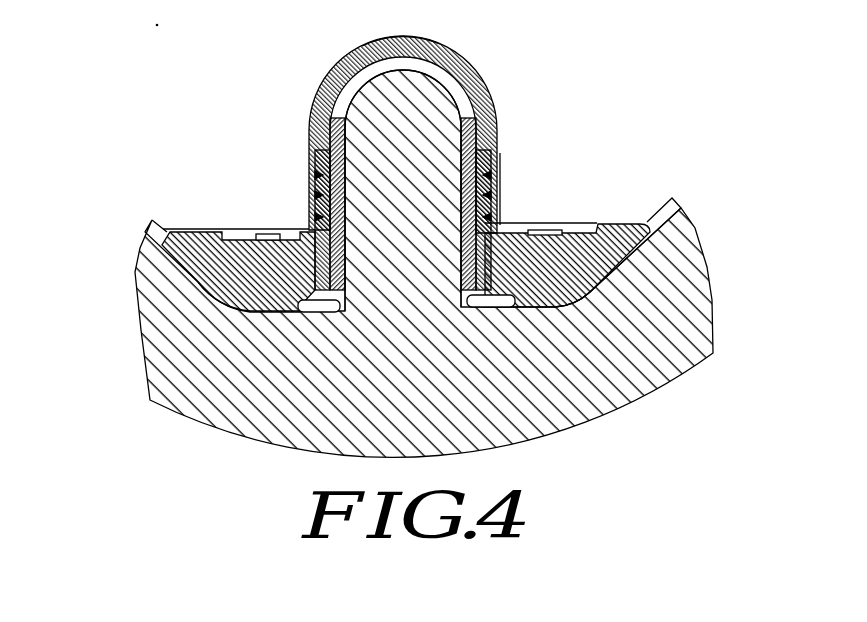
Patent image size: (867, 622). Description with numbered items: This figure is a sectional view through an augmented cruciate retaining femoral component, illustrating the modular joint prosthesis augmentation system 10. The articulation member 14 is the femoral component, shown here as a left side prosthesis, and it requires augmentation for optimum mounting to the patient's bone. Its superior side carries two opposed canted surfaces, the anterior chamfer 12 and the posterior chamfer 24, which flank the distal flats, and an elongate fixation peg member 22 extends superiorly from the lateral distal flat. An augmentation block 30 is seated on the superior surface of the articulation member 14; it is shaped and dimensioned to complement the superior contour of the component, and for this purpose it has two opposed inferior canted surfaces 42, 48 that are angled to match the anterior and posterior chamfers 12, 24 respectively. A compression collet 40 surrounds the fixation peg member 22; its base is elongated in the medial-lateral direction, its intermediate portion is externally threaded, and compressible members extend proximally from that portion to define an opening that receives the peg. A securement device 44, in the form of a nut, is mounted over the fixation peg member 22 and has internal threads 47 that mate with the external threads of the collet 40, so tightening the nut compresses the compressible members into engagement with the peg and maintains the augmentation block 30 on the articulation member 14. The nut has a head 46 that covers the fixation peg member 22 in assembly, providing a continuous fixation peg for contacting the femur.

The modular joint prosthesis augmentation system 10 is at (202, 134).
The anterior chamfer 12 is at (178, 265).
The articulation member 14 is at (695, 220).
The fixation peg member 22 is at (455, 88).
The posterior chamfer 24 is at (627, 268).
The augmentation block 30 is at (612, 219).
The compression collet 40 is at (478, 119).
The inferior canted surface 42 is at (178, 265).
The securement device 44 is at (450, 49).
The head 46 is at (362, 48).
The internal threads 47 is at (497, 173).
The inferior canted surface 48 is at (589, 232).